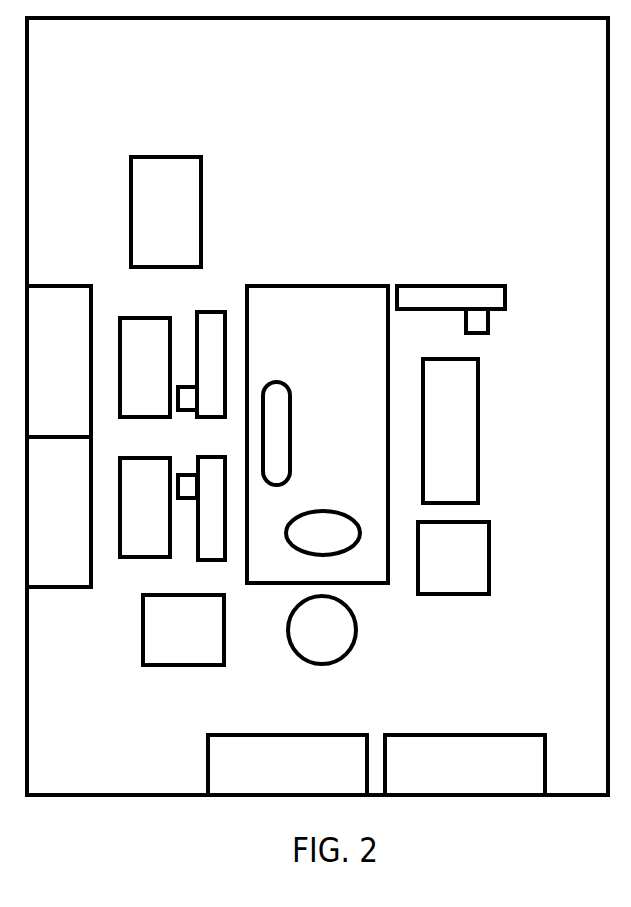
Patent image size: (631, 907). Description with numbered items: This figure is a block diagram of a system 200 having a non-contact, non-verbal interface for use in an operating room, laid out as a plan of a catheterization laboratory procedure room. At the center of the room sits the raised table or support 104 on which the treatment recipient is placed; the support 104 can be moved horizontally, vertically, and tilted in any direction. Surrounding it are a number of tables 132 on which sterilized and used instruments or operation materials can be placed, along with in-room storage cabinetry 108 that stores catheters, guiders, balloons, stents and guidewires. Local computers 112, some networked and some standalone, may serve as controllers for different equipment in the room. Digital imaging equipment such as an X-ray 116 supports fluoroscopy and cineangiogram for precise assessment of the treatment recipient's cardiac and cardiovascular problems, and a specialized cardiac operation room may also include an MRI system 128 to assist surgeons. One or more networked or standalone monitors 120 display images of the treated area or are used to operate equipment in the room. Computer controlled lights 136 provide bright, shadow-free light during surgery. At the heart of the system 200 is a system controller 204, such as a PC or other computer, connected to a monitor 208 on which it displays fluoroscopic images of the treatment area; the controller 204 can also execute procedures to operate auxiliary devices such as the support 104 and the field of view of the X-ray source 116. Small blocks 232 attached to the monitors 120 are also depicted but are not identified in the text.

The system 200 is at (27, 103).
The table or support 104 is at (365, 296).
The storage cabinetry 108 is at (78, 377).
The local computers 112 is at (472, 572).
The X-ray 116 is at (337, 633).
The monitors 120 is at (212, 326).
The MRI system 128 is at (185, 226).
The tables 132 is at (135, 316).
The computer controlled lights 136 is at (312, 511).
The system controller 204 is at (204, 645).
The monitor 208 is at (276, 385).
The connectors 232 is at (179, 410).